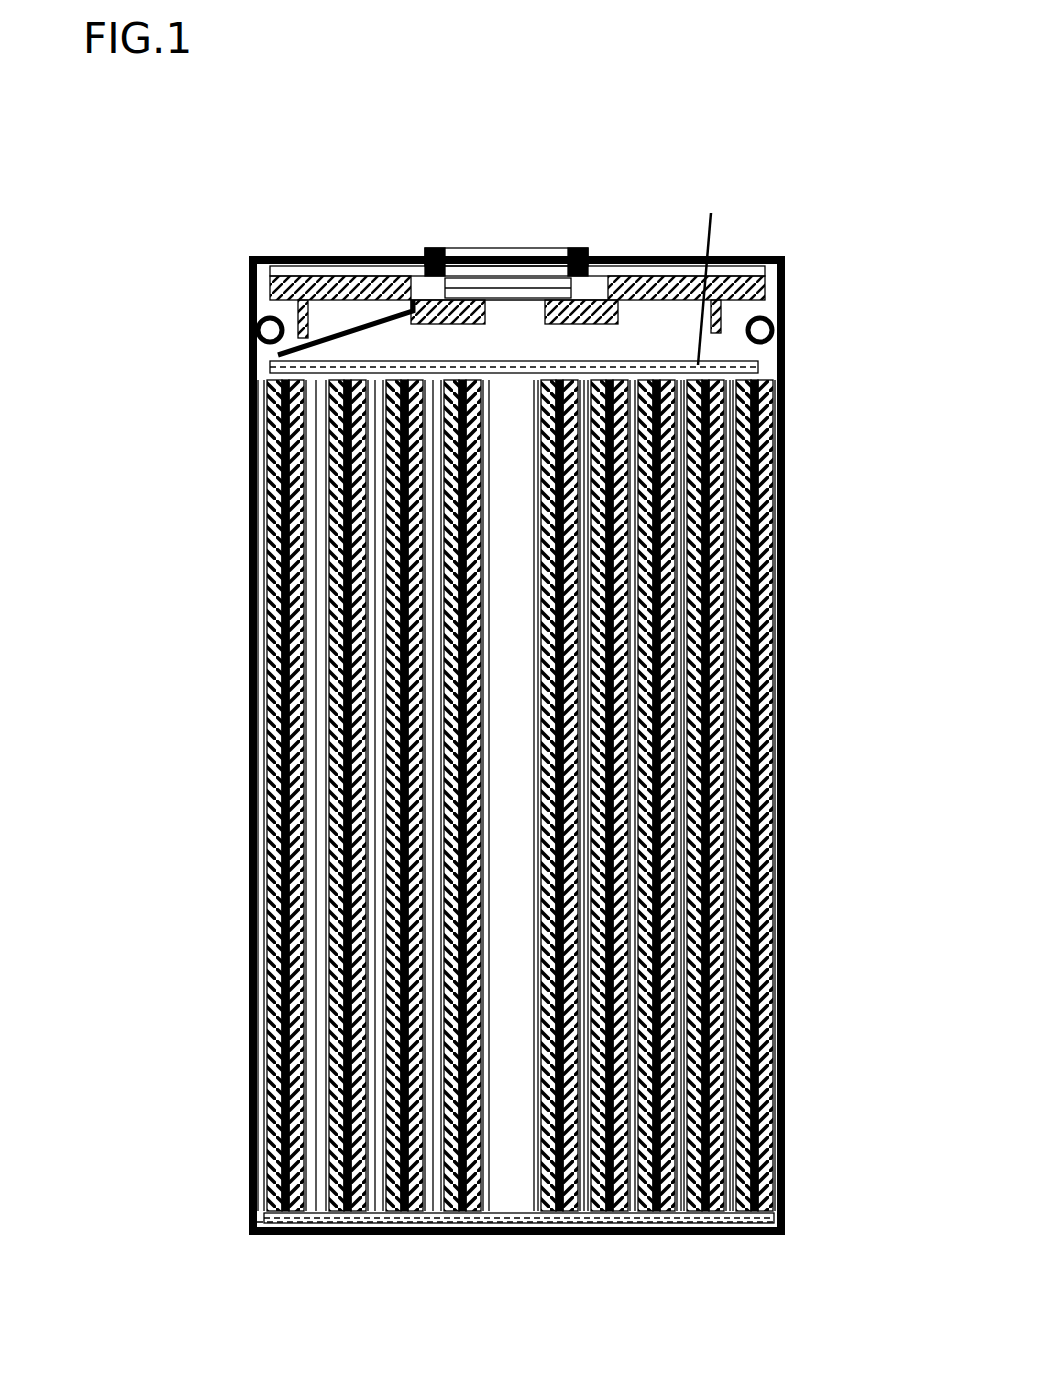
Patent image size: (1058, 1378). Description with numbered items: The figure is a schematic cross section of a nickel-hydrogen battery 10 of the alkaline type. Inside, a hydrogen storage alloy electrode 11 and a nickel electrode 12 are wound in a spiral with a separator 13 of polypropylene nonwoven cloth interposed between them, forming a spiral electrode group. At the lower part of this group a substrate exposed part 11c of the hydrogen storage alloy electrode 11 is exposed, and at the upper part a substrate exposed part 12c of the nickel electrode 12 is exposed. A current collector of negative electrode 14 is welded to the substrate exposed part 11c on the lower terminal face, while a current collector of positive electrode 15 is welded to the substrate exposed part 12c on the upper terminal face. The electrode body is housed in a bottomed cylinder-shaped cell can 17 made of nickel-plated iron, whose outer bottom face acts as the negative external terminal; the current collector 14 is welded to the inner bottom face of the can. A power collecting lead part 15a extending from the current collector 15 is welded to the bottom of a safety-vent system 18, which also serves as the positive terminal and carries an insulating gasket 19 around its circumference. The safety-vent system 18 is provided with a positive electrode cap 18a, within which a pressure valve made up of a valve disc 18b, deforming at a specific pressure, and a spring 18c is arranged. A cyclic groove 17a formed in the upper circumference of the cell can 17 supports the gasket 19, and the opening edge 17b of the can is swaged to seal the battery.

The nickel-hydrogen battery 10 is at (366, 162).
The hydrogen storage alloy electrode 11 is at (534, 737).
The substrate exposed part of hydrogen storage alloy electrode 11c is at (780, 1218).
The nickel electrode 12 is at (733, 614).
The substrate exposed part of nickel electrode 12c is at (780, 358).
The separator 13 is at (774, 848).
The current collector of negative electrode 14 is at (637, 1230).
The current collector of positive electrode 15 is at (723, 267).
The power collecting lead part 15a is at (350, 268).
The cell can 17 is at (470, 406).
The cyclic groove 17a is at (244, 324).
The opening edge 17b is at (745, 246).
The safety-vent system 18 is at (537, 225).
The positive electrode cap 18a is at (430, 255).
The valve disc 18b is at (480, 258).
The spring 18c is at (568, 248).
The insulating gasket 19 is at (246, 298).